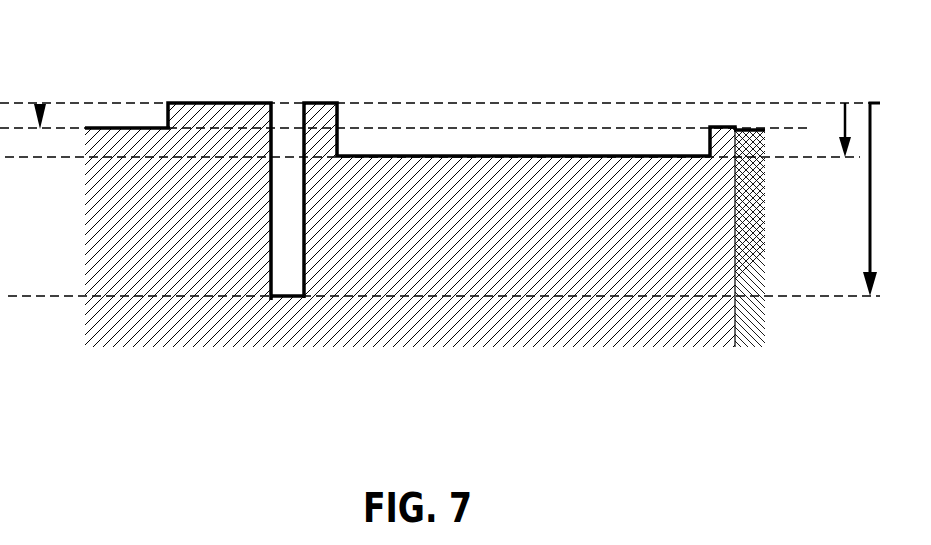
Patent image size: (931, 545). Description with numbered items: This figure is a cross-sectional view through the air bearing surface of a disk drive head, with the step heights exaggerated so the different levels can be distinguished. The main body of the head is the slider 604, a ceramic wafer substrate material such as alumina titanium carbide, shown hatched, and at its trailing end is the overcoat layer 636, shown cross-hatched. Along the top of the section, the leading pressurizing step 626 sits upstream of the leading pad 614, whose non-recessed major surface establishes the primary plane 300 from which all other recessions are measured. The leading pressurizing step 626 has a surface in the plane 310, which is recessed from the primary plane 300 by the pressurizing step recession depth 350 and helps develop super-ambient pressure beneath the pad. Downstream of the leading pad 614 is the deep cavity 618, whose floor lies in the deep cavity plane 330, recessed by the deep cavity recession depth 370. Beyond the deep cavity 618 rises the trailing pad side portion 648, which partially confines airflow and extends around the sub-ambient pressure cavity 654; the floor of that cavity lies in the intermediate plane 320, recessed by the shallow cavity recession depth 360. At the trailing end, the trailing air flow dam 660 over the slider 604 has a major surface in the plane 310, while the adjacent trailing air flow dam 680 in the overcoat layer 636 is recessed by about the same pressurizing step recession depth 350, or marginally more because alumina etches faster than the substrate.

The primary plane 300 is at (832, 103).
The plane 310 is at (782, 126).
The intermediate plane 320 is at (8, 157).
The deep cavity plane 330 is at (8, 296).
The pressurizing step recession depth 350 is at (48, 125).
The shallow cavity recession depth 360 is at (838, 133).
The deep cavity recession depth 370 is at (868, 197).
The slider 604 is at (597, 315).
The leading pad 614 is at (219, 190).
The deep cavity 618 is at (287, 297).
The leading pressurizing step 626 is at (127, 119).
The overcoat layer 636 is at (753, 330).
The trailing pad side portion 648 is at (321, 188).
The sub-ambient pressure cavity 654 is at (523, 145).
The trailing air flow dam 660 is at (717, 127).
The trailing air flow dam 680 is at (750, 130).